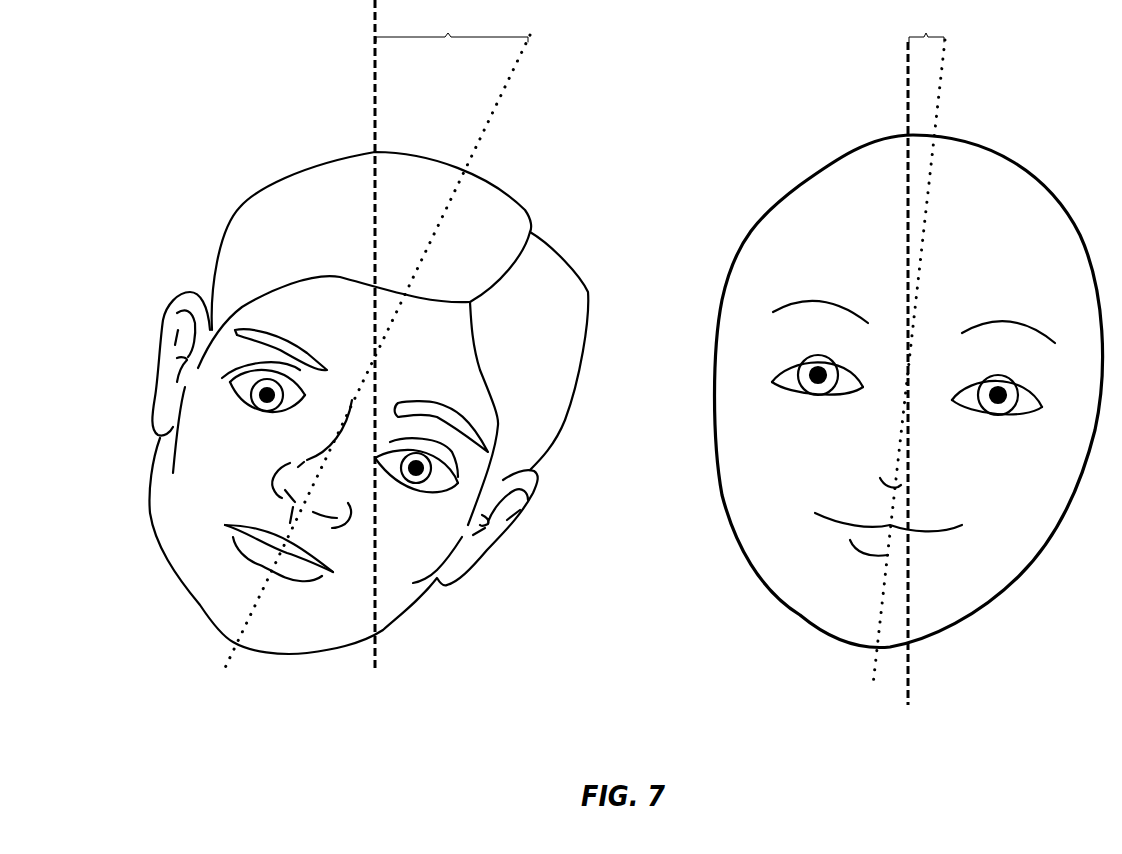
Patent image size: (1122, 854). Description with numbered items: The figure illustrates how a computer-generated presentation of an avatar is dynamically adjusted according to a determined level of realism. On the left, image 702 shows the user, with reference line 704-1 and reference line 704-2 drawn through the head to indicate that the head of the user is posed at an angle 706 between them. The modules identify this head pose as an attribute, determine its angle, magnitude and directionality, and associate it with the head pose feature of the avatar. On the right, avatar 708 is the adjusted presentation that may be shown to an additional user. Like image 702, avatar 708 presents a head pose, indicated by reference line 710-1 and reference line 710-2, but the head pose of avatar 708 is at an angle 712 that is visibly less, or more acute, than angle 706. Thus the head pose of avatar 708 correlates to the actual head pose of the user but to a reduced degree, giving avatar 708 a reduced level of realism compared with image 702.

The image 702 is at (127, 707).
The reference line 704-1 is at (374, 53).
The reference line 704-2 is at (513, 68).
The angle 706 is at (452, 23).
The avatar 708 is at (702, 707).
The reference line 710-1 is at (906, 55).
The reference line 710-2 is at (946, 58).
The angle 712 is at (926, 23).